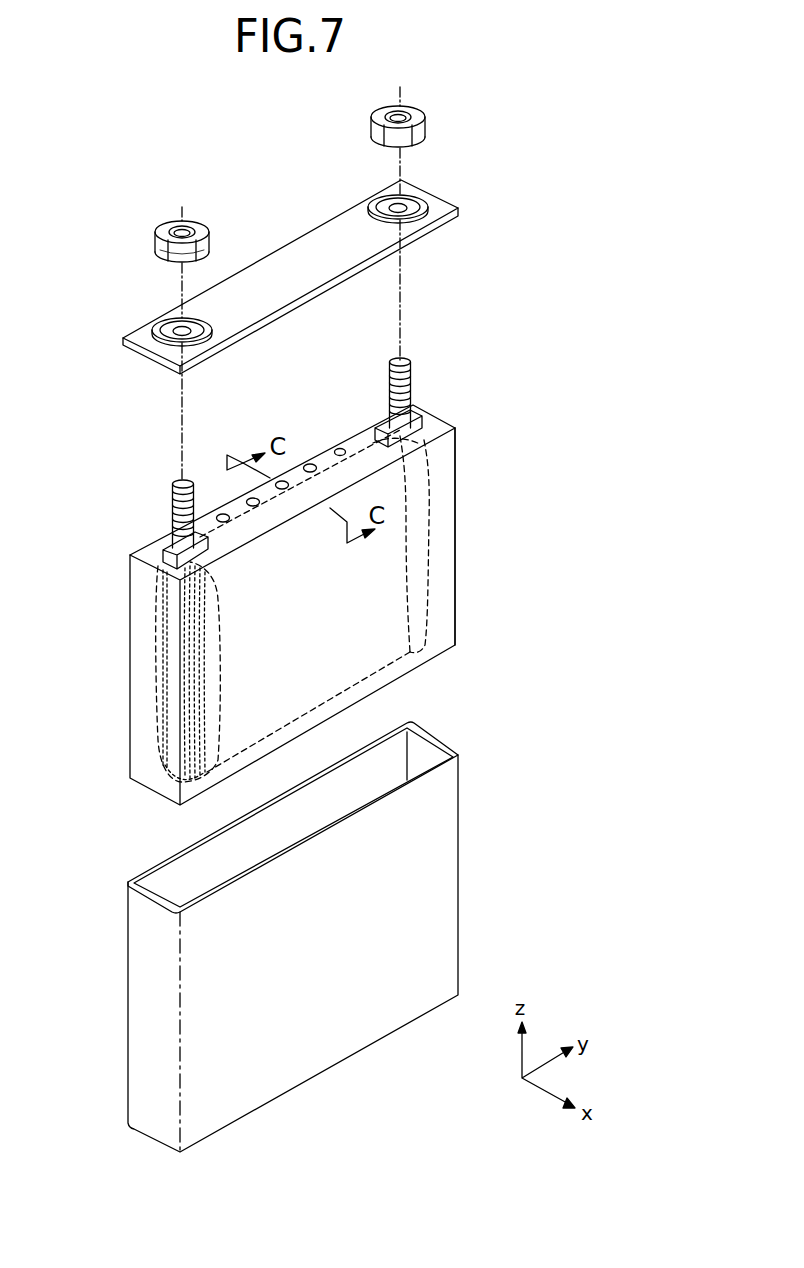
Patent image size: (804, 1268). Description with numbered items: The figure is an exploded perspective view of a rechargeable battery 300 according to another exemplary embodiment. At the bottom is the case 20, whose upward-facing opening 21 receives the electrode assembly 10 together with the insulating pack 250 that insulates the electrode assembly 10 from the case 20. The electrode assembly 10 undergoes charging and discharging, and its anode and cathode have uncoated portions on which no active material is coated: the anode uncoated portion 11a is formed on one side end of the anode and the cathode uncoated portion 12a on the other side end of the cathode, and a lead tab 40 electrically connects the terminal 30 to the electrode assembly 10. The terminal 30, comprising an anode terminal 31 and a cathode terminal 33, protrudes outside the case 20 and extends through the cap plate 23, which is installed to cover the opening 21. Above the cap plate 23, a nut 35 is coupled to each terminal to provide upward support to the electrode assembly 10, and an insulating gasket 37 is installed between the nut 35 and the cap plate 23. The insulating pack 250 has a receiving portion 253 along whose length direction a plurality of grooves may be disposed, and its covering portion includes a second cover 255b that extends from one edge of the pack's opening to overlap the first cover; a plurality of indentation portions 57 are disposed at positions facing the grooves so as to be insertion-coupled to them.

The rechargeable battery 300 is at (222, 145).
The nut 35 is at (156, 247).
The gasket 37 is at (412, 190).
The cap plate 23 is at (285, 265).
The terminal 30 is at (312, 352).
The anode terminal 31 is at (187, 482).
The cathode terminal 33 is at (392, 362).
The insulating pack 250 is at (127, 677).
The second cover 255b is at (361, 466).
The indentation portion 57 is at (342, 448).
The electrode assembly 10 is at (366, 597).
The cathode uncoated portion 12a is at (412, 522).
The receiving portion 253 is at (443, 622).
The anode uncoated portion 11a is at (207, 602).
The lead tab 40 is at (170, 735).
The case 20 is at (300, 1077).
The opening 21 is at (416, 760).